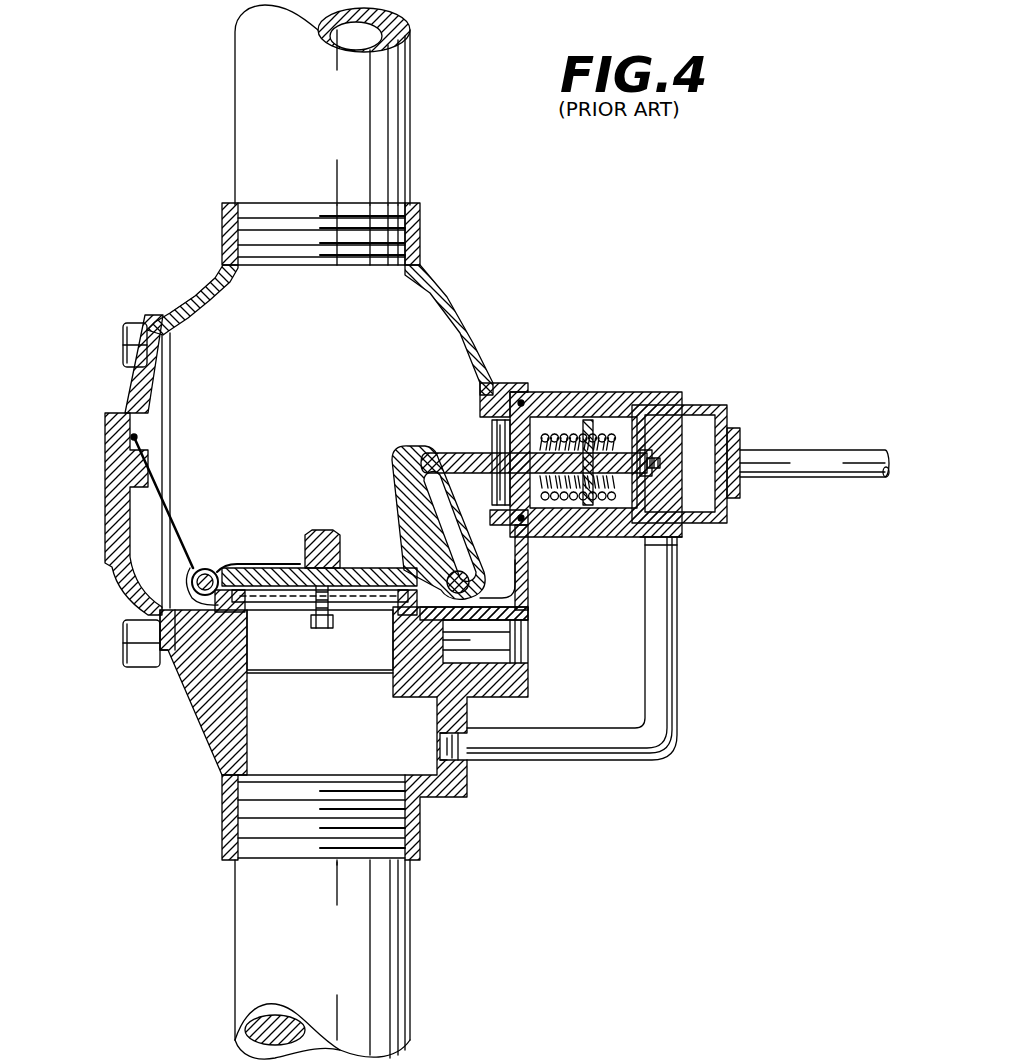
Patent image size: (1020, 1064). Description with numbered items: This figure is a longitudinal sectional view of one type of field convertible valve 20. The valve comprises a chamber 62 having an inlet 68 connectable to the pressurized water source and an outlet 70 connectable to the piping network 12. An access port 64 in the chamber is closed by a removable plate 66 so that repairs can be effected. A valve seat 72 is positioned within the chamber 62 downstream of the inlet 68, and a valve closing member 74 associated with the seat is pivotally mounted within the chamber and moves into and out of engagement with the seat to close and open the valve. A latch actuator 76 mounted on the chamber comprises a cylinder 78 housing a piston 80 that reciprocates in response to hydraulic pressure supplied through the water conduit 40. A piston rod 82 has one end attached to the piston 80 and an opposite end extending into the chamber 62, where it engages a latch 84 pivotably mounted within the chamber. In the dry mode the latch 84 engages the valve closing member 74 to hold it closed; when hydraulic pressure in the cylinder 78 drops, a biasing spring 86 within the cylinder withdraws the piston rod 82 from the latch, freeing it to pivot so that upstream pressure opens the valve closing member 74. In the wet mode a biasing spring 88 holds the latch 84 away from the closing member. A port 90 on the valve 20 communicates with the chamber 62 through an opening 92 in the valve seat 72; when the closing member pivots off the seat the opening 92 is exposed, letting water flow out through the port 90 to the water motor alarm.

The piping network 12 is at (402, 75).
The field convertible valve 20 is at (195, 290).
The water conduit 40 is at (815, 453).
The chamber 62 is at (430, 335).
The access port 64 is at (148, 410).
The removable plate 66 is at (110, 490).
The inlet 68 is at (222, 800).
The outlet 70 is at (422, 222).
The valve seat 72 is at (262, 625).
The valve closing member 74 is at (320, 530).
The latch actuator 76 is at (598, 392).
The cylinder 78 is at (683, 428).
The piston 80 is at (638, 487).
The piston rod 82 is at (556, 393).
The latch 84 is at (407, 457).
The biasing spring 86 is at (600, 488).
The biasing spring 88 is at (170, 528).
The port 90 is at (528, 652).
The opening 92 is at (392, 628).